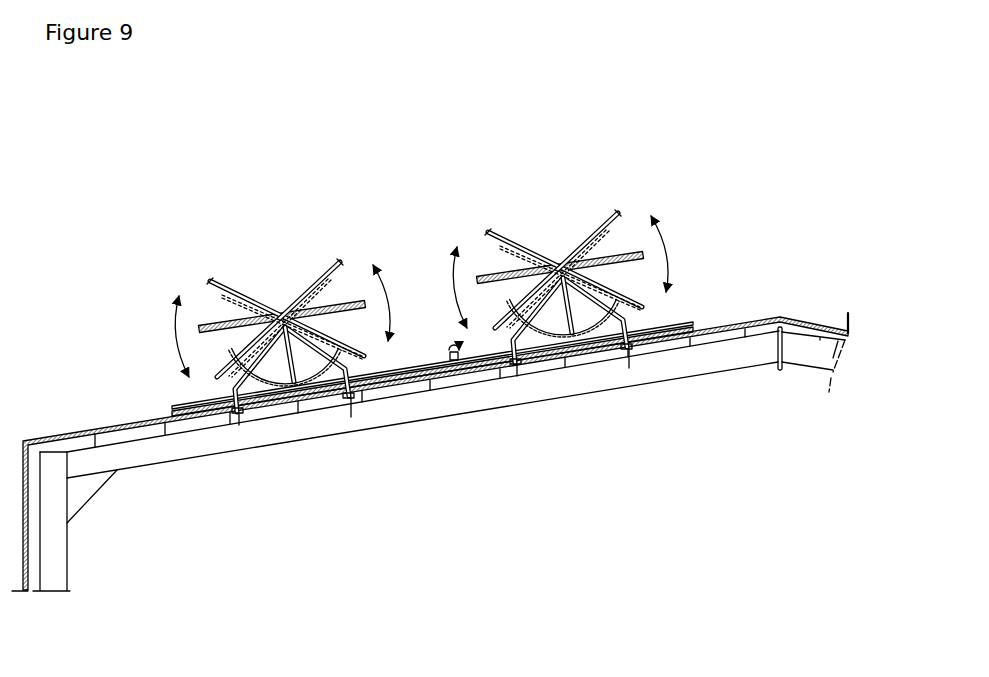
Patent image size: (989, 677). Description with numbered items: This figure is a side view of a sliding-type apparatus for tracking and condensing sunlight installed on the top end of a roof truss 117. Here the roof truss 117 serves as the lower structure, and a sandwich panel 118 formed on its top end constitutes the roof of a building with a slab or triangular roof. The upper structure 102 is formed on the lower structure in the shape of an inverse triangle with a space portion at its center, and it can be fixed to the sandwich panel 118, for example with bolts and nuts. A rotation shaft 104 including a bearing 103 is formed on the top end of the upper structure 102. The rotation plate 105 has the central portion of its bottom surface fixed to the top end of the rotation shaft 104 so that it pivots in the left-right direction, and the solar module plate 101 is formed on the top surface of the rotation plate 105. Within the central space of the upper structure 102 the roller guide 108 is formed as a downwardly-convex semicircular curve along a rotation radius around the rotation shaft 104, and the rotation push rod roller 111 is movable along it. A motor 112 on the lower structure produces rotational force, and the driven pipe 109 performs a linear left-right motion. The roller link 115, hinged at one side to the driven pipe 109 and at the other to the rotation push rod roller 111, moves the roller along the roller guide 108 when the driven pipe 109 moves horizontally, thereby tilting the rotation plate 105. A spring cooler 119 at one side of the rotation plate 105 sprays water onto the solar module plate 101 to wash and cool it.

The solar module plate 101 is at (608, 232).
The upper structure 102 is at (518, 343).
The bearing 103 is at (587, 257).
The rotation shaft 104 is at (560, 262).
The rotation plate 105 is at (487, 282).
The roller guide 108 is at (620, 330).
The driven pipe 109 is at (674, 322).
The rotation push rod roller 111 is at (607, 330).
The motor 112 is at (446, 357).
The roller link 115 is at (572, 335).
The roof truss 117 is at (430, 412).
The sandwich panel 118 is at (818, 322).
The spring cooler 119 is at (633, 250).